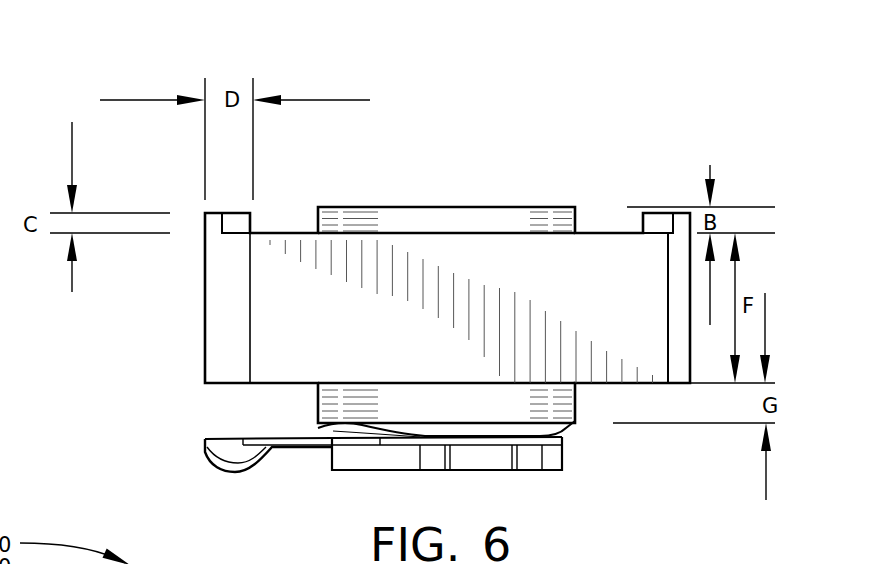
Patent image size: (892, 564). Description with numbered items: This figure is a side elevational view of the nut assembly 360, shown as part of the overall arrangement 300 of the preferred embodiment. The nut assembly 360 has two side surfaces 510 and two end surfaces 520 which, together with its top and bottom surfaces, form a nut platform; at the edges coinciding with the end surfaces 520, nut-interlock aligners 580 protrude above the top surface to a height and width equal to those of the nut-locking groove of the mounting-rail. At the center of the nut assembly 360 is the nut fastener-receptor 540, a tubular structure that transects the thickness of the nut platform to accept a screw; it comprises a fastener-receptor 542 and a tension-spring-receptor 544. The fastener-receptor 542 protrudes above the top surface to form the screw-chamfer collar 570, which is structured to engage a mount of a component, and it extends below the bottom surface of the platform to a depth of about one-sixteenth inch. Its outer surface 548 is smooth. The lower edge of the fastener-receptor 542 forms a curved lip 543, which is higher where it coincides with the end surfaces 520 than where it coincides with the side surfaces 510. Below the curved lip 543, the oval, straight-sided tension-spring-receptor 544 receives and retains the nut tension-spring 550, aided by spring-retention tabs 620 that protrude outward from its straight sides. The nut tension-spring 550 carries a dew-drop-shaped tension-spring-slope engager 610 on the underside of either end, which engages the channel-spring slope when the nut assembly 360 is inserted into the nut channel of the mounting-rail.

The implant assembly 300 is at (562, 79).
The nut assembly 360 is at (562, 100).
The nut fastener-receptor 540 is at (562, 156).
The fastener-receptor 542 is at (576, 214).
The screw-chamfer collar 570 is at (395, 218).
The nut-interlock aligner 580 is at (253, 225).
The end surface 520 is at (205, 336).
The side surface 510 is at (652, 385).
The outer surface 548 is at (473, 419).
The curved lip 543 is at (320, 426).
The nut tension-spring 550 is at (212, 437).
The tension-spring-slope engager 610 is at (228, 474).
The tension-spring-receptor 544 is at (342, 471).
The spring-retention tab 620 is at (480, 458).